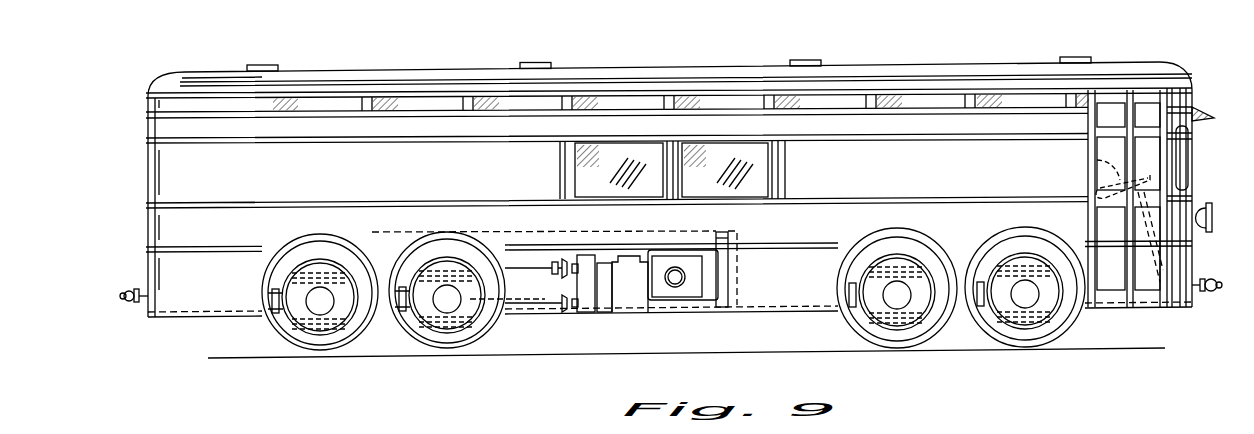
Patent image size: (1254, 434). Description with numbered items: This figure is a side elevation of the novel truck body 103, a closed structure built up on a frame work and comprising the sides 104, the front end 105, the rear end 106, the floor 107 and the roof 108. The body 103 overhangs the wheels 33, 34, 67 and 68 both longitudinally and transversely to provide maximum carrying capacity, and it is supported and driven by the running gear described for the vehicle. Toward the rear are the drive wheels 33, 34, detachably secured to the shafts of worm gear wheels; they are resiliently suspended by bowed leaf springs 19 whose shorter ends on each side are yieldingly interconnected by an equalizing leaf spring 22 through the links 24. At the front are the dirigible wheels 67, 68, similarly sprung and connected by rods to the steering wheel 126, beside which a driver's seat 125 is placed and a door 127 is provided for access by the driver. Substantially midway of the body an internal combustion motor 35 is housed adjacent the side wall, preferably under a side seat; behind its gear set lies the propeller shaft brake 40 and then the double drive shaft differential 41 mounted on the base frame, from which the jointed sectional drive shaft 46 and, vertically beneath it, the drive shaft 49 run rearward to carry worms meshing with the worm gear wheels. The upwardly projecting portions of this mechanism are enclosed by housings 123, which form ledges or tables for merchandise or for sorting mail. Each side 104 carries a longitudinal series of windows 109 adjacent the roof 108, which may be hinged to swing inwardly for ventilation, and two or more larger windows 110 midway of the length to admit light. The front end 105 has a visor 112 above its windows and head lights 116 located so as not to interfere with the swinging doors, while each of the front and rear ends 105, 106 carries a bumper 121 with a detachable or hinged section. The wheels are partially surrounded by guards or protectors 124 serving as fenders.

The bowed leaf spring 19 is at (275, 334).
The equalizing leaf spring 22 is at (331, 262).
The links 24 is at (262, 299).
The drive wheel 33 is at (468, 348).
The drive wheel 34 is at (320, 298).
The motor 35 is at (673, 292).
The propeller shaft brake 40 is at (604, 313).
The double drive shaft differential 41 is at (590, 256).
The sectional drive shaft 46 is at (528, 263).
The drive shaft 49 is at (553, 305).
The dirigible wheel 67 is at (892, 338).
The dirigible wheel 68 is at (1032, 335).
The truck body 103 is at (903, 147).
The sides 104 is at (376, 160).
The front end 105 is at (1189, 179).
The rear end 106 is at (148, 190).
The floor 107 is at (763, 307).
The roof 108 is at (627, 82).
The windows 109 is at (834, 100).
The larger windows 110 is at (638, 172).
The visor 112 is at (1195, 108).
The head lights 116 is at (1205, 233).
The bumper 121 is at (122, 298).
The housings 123 is at (722, 231).
The guards or protectors 124 is at (370, 232).
The driver's seat 125 is at (1088, 225).
The steering wheel 126 is at (1120, 178).
The door 127 is at (1133, 288).